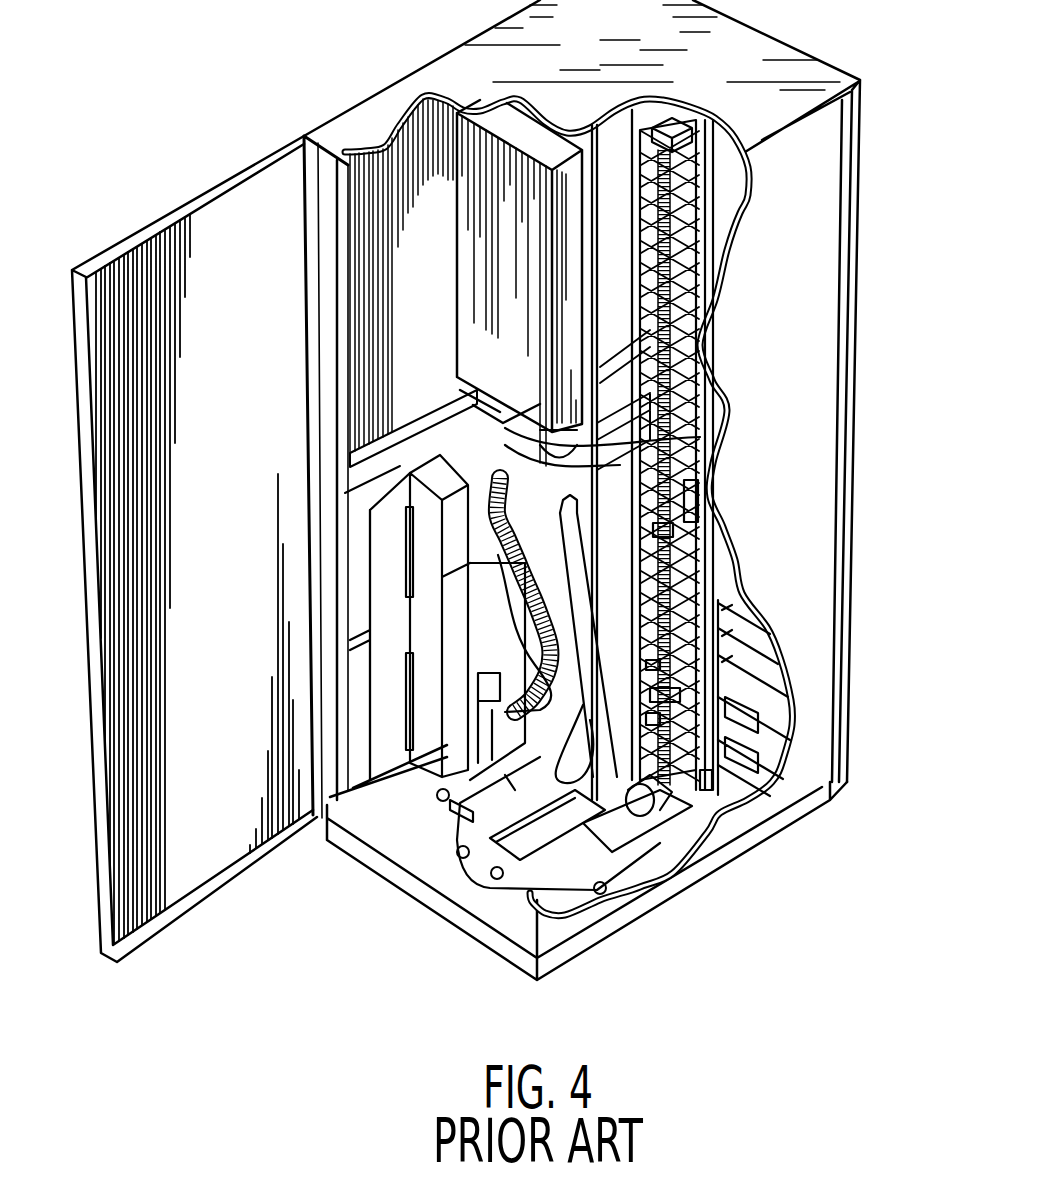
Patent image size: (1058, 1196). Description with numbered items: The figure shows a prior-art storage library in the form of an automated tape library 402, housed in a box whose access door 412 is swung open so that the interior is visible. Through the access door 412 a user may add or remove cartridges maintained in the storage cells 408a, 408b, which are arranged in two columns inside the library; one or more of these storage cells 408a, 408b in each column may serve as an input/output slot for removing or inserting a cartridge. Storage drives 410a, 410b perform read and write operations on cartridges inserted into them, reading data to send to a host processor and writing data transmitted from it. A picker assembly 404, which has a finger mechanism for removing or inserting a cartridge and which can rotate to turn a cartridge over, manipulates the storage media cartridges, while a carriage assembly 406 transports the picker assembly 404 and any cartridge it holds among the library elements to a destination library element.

The automated tape library 402 is at (250, 104).
The picker assembly 404 is at (690, 393).
The carriage assembly 406 is at (700, 146).
The storage cell 408a is at (686, 571).
The storage cell 408b is at (760, 662).
The storage drive 410a is at (684, 695).
The storage drive 410b is at (765, 736).
The access door 412 is at (162, 318).